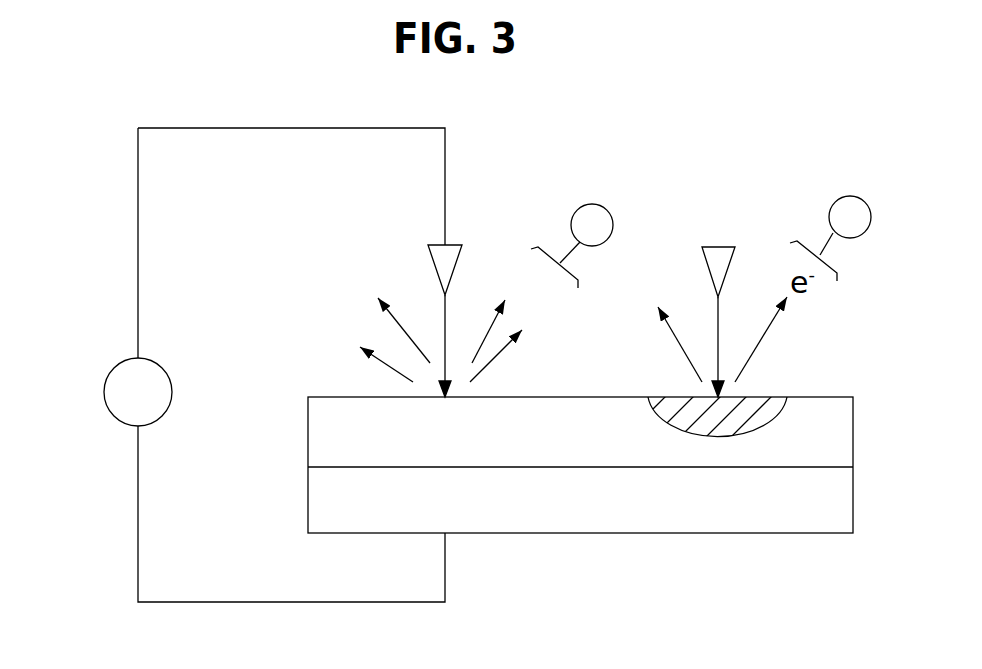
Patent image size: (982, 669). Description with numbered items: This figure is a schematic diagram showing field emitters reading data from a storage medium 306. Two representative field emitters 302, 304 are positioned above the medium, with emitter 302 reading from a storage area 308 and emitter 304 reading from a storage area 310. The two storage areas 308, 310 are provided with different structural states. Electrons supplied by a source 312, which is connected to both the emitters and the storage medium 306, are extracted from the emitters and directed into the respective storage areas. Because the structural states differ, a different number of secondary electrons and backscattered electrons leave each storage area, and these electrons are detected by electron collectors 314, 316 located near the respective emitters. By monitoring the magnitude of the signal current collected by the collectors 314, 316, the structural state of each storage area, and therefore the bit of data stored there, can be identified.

The field emitter 302 is at (452, 245).
The field emitter 304 is at (728, 245).
The storage medium 306 is at (820, 537).
The storage area 308 is at (480, 397).
The storage area 310 is at (768, 398).
The source 312 is at (173, 395).
The electron collector 314 is at (590, 203).
The electron collector 316 is at (853, 195).